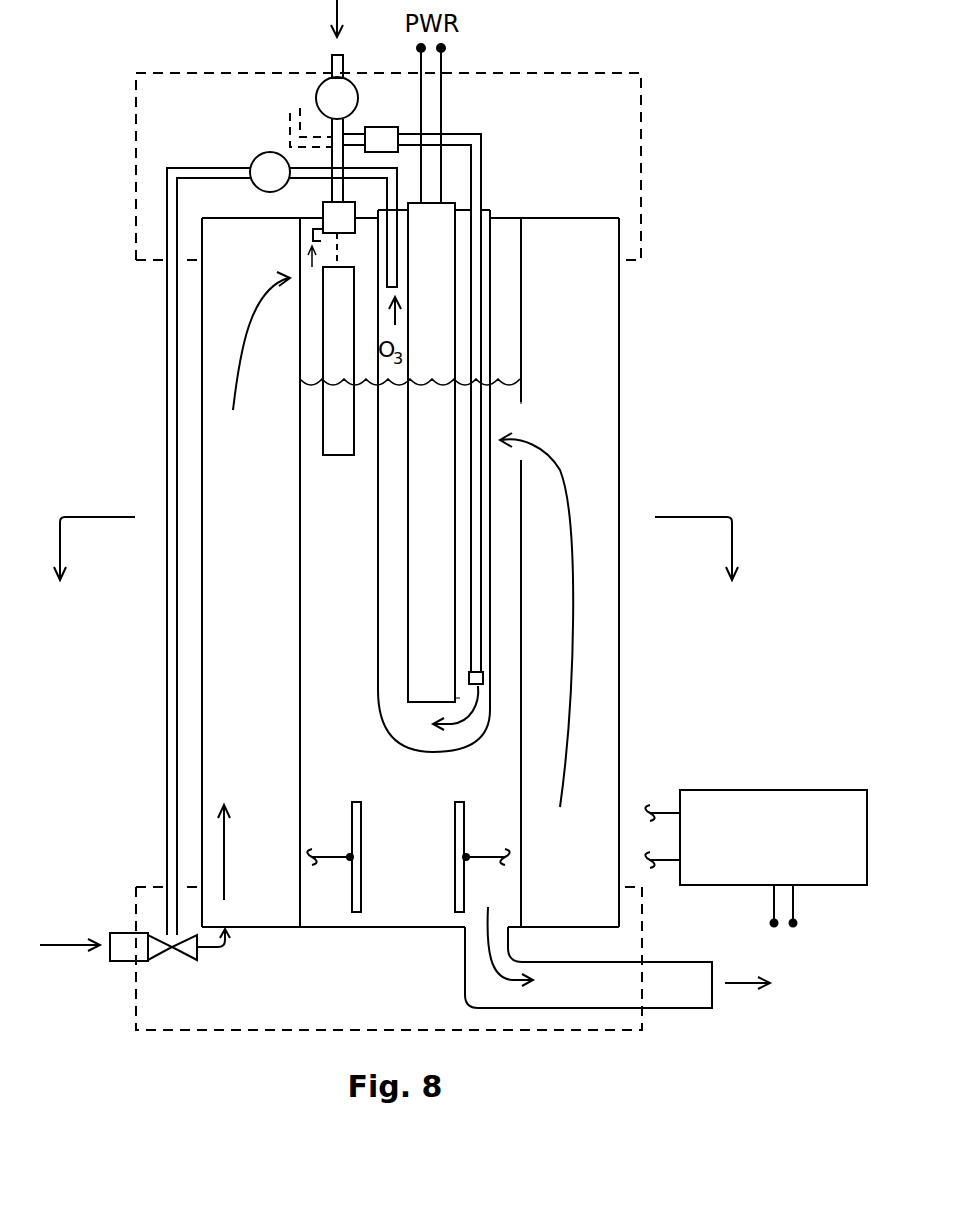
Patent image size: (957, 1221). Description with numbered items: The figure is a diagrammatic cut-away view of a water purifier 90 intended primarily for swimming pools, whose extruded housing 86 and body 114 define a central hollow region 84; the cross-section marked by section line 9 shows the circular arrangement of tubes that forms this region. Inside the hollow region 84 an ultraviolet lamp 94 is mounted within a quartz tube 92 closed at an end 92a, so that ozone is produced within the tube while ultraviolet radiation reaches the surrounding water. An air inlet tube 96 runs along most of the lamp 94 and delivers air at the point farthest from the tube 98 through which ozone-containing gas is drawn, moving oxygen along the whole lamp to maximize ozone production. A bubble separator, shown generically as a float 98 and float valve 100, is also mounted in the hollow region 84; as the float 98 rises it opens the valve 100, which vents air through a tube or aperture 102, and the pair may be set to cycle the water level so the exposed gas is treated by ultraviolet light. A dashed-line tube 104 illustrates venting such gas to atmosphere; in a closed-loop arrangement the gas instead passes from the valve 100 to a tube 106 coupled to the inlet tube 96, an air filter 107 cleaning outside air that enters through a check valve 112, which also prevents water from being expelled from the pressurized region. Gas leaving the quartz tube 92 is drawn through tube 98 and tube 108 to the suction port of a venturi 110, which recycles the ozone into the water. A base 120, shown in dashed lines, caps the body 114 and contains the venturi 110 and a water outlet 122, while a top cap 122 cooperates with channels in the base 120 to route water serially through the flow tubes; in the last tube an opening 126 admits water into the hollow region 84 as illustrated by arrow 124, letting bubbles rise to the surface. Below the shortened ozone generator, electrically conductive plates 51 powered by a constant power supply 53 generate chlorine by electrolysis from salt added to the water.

The section line 9 is at (395, 567).
The electrically conductive plates 51 is at (454, 814).
The constant power supply 53 is at (798, 790).
The hollow region 84 is at (512, 250).
The housing 86 is at (202, 567).
The water purifier 90 is at (656, 761).
The quartz tube 92 is at (377, 528).
The closed end 92a is at (470, 733).
The ultraviolet lamp 94 is at (460, 698).
The air inlet tube 96 is at (483, 150).
The float 98 is at (323, 340).
The float valve 100 is at (323, 214).
The tube or aperture 102 is at (313, 240).
The dashed line tube 104 is at (280, 121).
The tube 106 is at (318, 164).
The air filter 107 is at (383, 127).
The tube 108 is at (167, 802).
The venturi 110 is at (343, 127).
The check valve 112 is at (318, 94).
The body 114 is at (668, 404).
The base 120 is at (190, 1032).
The top cap 122 is at (645, 185).
The arrow 124 is at (573, 563).
The opening 126 is at (535, 424).